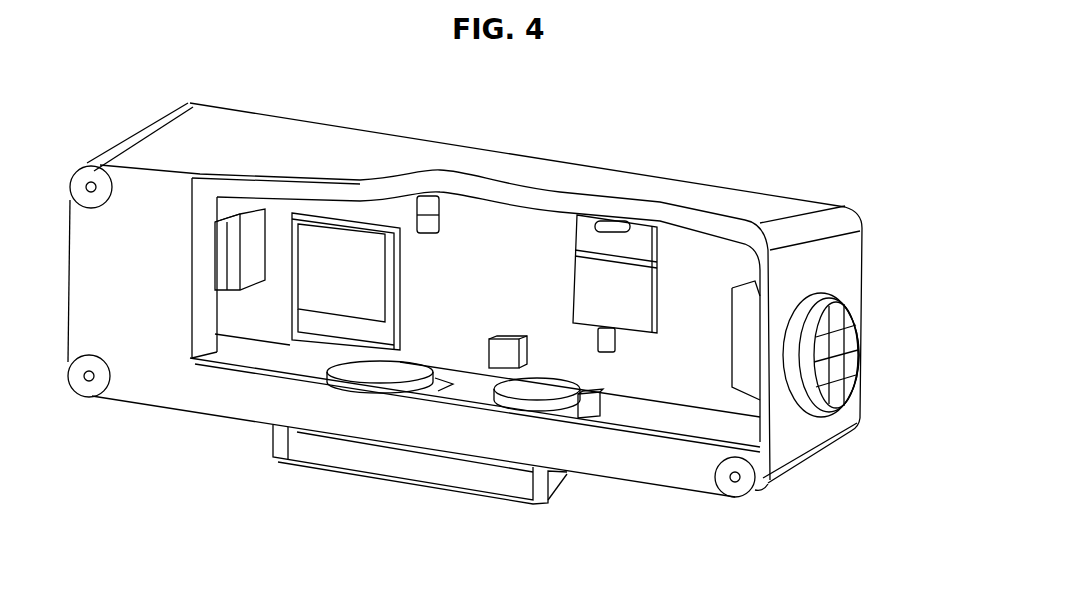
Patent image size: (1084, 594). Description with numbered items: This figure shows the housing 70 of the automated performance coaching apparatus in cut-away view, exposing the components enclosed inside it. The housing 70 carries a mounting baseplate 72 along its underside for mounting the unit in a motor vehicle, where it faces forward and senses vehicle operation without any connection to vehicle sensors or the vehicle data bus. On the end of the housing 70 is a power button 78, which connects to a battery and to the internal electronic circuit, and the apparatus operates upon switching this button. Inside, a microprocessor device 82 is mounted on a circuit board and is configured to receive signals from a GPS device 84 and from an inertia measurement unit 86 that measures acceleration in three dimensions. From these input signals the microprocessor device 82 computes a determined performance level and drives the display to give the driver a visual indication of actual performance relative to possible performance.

The housing 70 is at (522, 153).
The mounting baseplate 72 is at (338, 453).
The power button 78 is at (857, 343).
The microprocessor device 82 is at (332, 245).
The GPS device 84 is at (628, 283).
The inertia measurement unit 86 is at (508, 357).